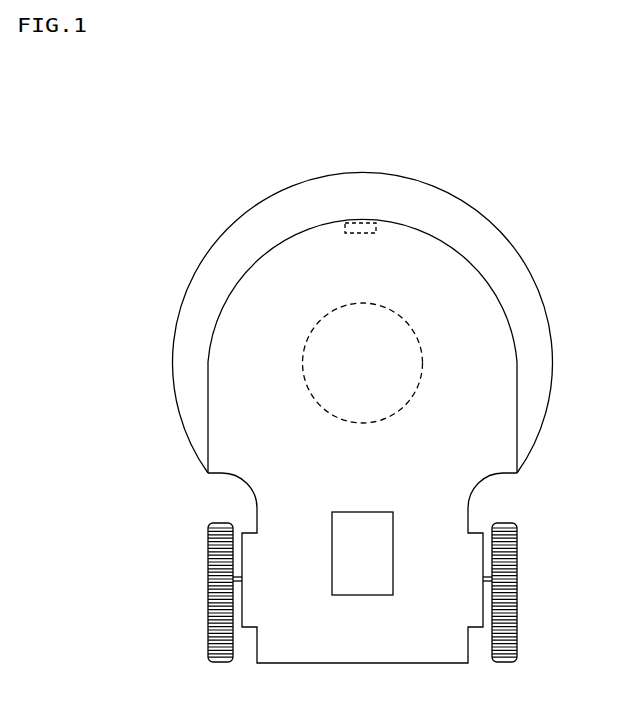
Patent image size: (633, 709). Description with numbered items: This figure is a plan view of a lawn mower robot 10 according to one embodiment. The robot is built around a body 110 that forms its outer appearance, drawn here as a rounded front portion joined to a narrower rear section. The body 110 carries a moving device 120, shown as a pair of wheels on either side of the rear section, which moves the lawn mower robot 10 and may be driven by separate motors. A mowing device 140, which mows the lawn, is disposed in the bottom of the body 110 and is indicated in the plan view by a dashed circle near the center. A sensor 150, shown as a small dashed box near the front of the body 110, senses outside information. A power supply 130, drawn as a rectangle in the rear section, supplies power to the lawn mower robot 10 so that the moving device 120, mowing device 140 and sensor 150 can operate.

The lawn mower robot 10 is at (86, 92).
The body 110 is at (153, 332).
The moving device 120 is at (202, 586).
The power supply 130 is at (370, 595).
The mowing device 140 is at (407, 317).
The sensor 150 is at (362, 223).